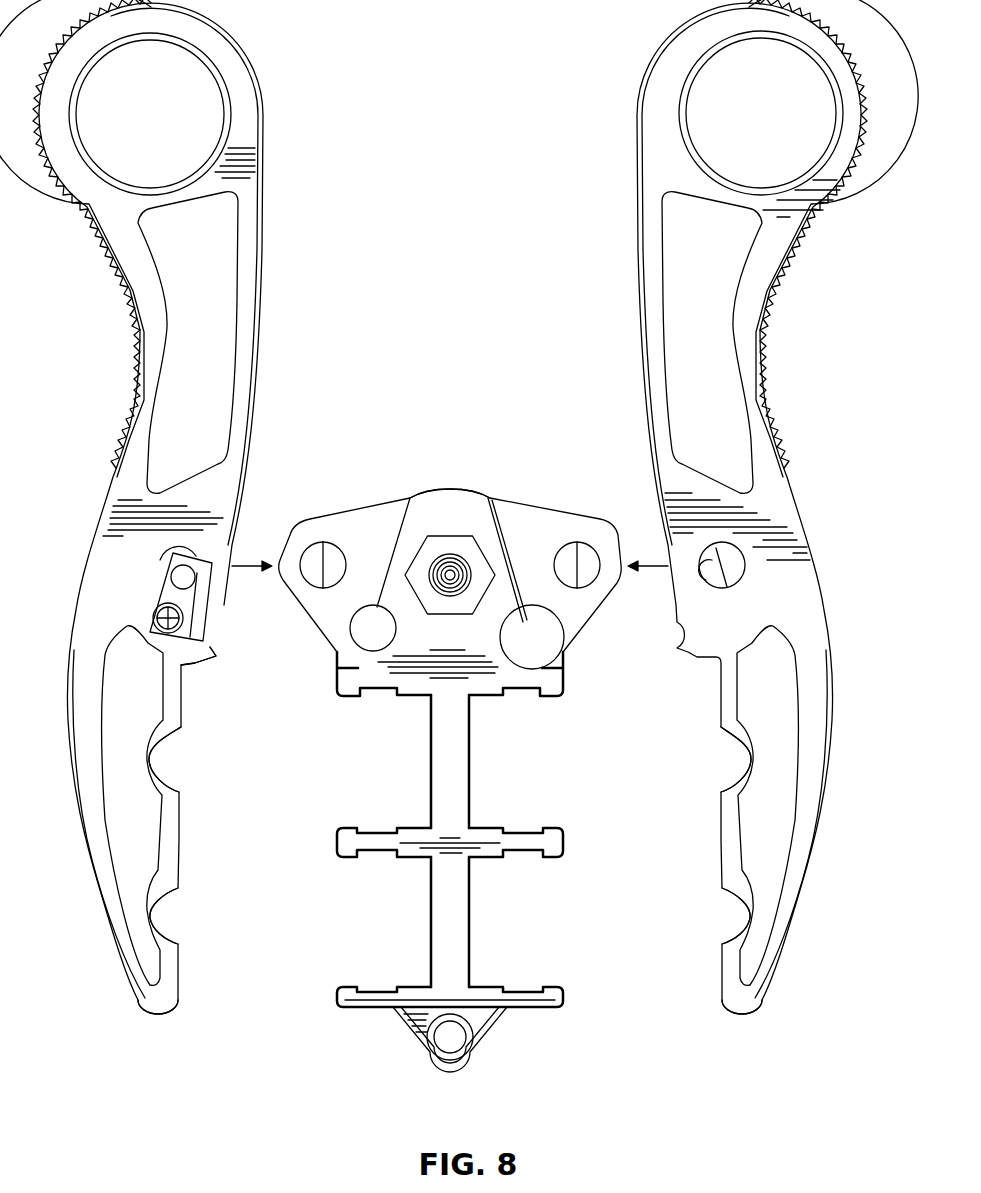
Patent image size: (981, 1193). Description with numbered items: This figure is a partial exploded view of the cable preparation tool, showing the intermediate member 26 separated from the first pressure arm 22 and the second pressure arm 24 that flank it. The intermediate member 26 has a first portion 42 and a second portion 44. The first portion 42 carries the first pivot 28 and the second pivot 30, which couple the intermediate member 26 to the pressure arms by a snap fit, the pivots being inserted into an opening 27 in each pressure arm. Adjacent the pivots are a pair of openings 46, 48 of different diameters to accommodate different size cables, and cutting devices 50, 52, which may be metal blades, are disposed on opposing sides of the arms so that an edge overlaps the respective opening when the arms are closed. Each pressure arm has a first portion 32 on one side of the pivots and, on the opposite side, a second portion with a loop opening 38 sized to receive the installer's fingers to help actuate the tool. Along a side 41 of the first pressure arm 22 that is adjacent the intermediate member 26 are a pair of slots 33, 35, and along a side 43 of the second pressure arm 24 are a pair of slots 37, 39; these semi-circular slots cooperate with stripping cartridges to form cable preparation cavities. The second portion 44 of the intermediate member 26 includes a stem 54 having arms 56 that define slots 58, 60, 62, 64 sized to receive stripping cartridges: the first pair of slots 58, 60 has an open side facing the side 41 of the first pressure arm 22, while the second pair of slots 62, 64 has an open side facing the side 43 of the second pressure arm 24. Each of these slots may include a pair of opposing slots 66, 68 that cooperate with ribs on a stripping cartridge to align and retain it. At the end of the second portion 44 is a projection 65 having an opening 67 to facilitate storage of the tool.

The first pressure arm 22 is at (833, 666).
The second pressure arm 24 is at (73, 634).
The intermediate member 26 is at (450, 761).
The opening 27 is at (168, 600).
The first pivot 28 is at (585, 542).
The second pivot 30 is at (322, 542).
The first portion 32 is at (110, 936).
The slot 33 is at (730, 764).
The slot 35 is at (730, 934).
The slot 37 is at (178, 753).
The loop opening 38 is at (140, 125).
The slot 39 is at (178, 913).
The side 41 is at (720, 976).
The first portion 42 is at (457, 489).
The side 43 is at (182, 973).
The second portion 44 is at (444, 999).
The opening 46 is at (553, 641).
The opening 48 is at (362, 631).
The cutting device 50 is at (700, 566).
The cutting device 52 is at (190, 661).
The stem 54 is at (473, 943).
The arm 56 is at (335, 843).
The slot 58 is at (505, 775).
The slot 60 is at (505, 933).
The slot 62 is at (360, 775).
The slot 64 is at (360, 933).
The projection 65 is at (450, 1066).
The opposing slot 66 is at (522, 860).
The opening 67 is at (450, 1040).
The opposing slot 68 is at (530, 989).